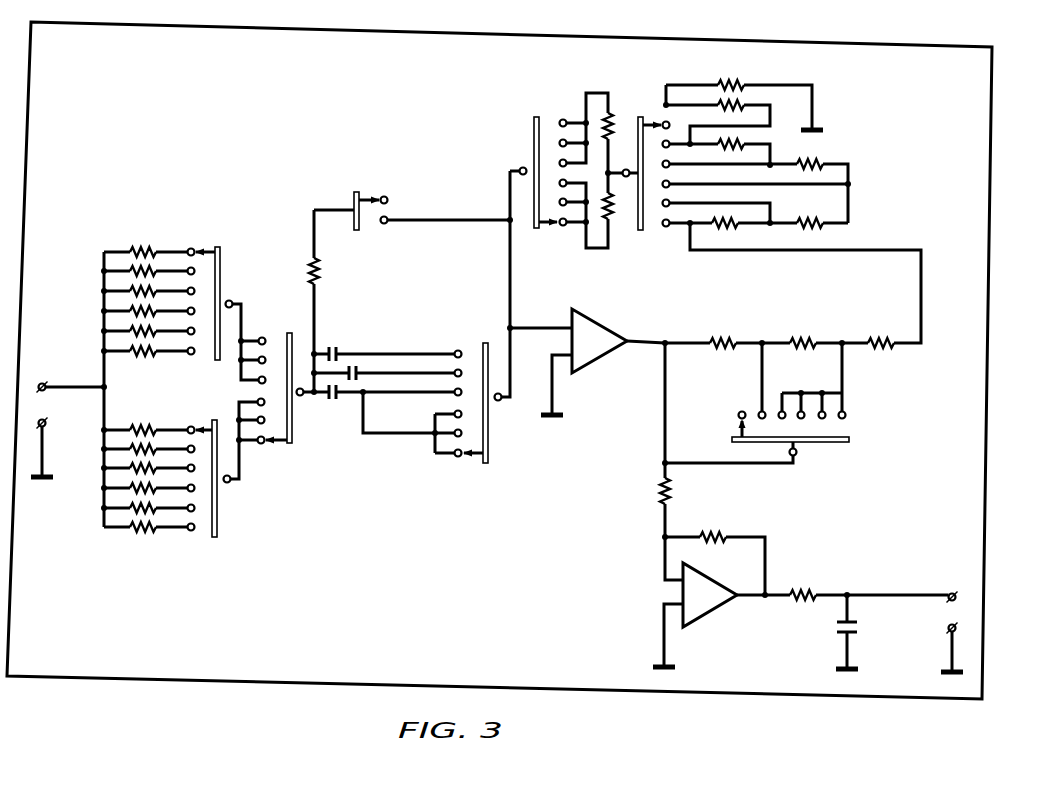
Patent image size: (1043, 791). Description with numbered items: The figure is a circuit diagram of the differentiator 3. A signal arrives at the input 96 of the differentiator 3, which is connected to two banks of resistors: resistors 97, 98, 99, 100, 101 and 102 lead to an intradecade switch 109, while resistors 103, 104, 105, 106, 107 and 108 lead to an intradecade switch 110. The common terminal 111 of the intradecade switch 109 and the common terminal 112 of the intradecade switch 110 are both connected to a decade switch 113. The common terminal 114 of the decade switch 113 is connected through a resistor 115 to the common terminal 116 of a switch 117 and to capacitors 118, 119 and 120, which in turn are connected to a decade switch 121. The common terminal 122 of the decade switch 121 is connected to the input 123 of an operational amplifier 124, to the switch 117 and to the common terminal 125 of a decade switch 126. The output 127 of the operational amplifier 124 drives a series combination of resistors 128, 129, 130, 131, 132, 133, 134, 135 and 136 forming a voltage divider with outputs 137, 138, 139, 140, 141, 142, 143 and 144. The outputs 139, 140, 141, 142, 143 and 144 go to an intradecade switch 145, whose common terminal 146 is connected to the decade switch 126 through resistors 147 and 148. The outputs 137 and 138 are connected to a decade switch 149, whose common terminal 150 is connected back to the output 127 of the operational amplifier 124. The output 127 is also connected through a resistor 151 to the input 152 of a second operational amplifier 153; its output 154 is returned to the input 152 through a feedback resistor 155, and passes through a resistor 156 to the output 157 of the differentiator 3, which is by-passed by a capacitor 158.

The differentiator 3 is at (992, 178).
The input 96 is at (44, 392).
The resistor 97 is at (140, 249).
The resistor 98 is at (130, 270).
The resistor 99 is at (130, 290).
The resistor 100 is at (130, 310).
The resistor 101 is at (133, 330).
The resistor 102 is at (140, 353).
The resistor 103 is at (146, 430).
The resistor 104 is at (130, 449).
The resistor 105 is at (130, 468).
The resistor 106 is at (128, 488).
The resistor 107 is at (128, 508).
The resistor 108 is at (142, 528).
The intradecade switch 109 is at (219, 246).
The intradecade switch 110 is at (218, 540).
The common terminal 111 is at (232, 300).
The common terminal 112 is at (232, 484).
The decade switch 113 is at (287, 331).
The common terminal 114 is at (301, 399).
The resistor 115 is at (318, 282).
The common terminal 116 is at (334, 210).
The switch 117 is at (356, 190).
The capacitor 118 is at (332, 346).
The capacitor 119 is at (353, 368).
The capacitor 120 is at (334, 398).
The decade switch 121 is at (486, 467).
The common terminal 122 is at (502, 404).
The input 123 is at (530, 327).
The operational amplifier 124 is at (597, 356).
The common terminal 125 is at (520, 168).
The decade switch 126 is at (535, 115).
The output 127 is at (642, 343).
The resistor 128 is at (722, 333).
The resistor 129 is at (815, 333).
The resistor 130 is at (883, 343).
The resistor 131 is at (740, 230).
The resistor 132 is at (822, 230).
The resistor 133 is at (824, 165).
The resistor 134 is at (742, 150).
The resistor 135 is at (742, 105).
The resistor 136 is at (724, 85).
The output 137 is at (758, 347).
The output 138 is at (838, 347).
The output 139 is at (688, 226).
The output 140 is at (773, 222).
The output 141 is at (852, 185).
The output 142 is at (768, 166).
The output 143 is at (690, 142).
The output 144 is at (666, 103).
The intradecade switch 145 is at (637, 115).
The common terminal 146 is at (626, 180).
The resistor 147 is at (604, 124).
The resistor 148 is at (604, 218).
The decade switch 149 is at (856, 441).
The switch contact 150 is at (801, 458).
The resistor 151 is at (662, 493).
The input 152 is at (677, 581).
The operational amplifier 153 is at (708, 620).
The output 154 is at (748, 598).
The feedback resistor 155 is at (722, 537).
The resistor 156 is at (812, 595).
The output 157 is at (949, 626).
The capacitor 158 is at (860, 630).